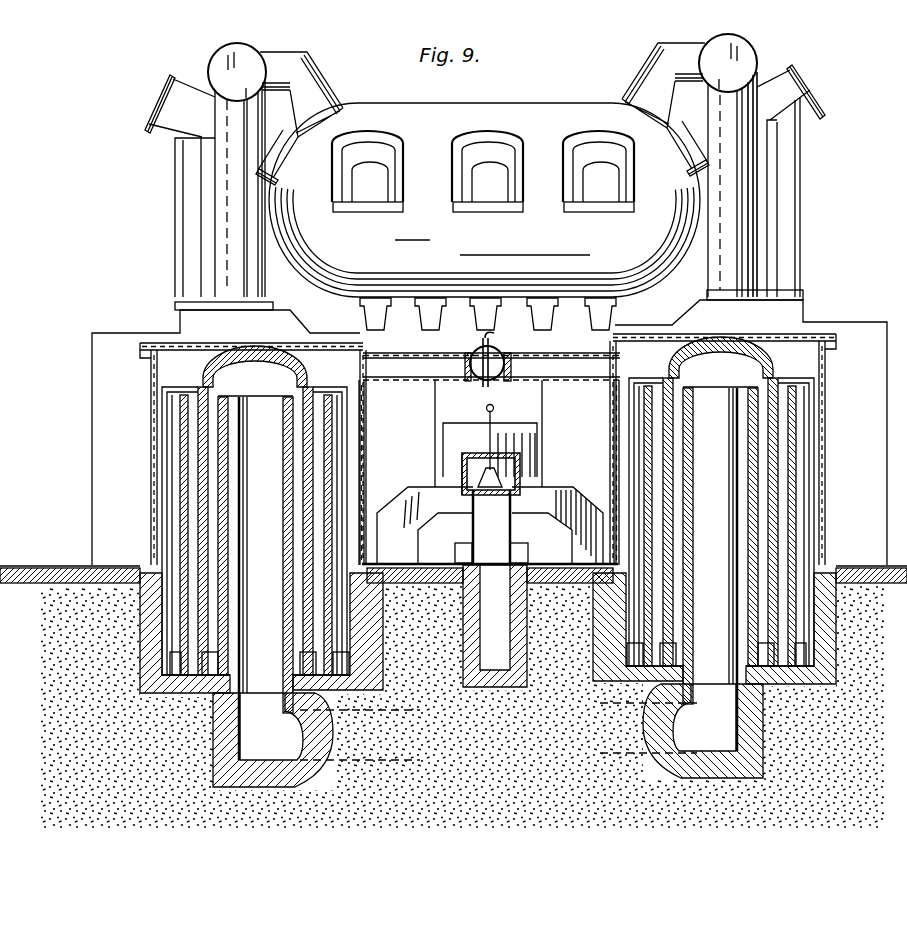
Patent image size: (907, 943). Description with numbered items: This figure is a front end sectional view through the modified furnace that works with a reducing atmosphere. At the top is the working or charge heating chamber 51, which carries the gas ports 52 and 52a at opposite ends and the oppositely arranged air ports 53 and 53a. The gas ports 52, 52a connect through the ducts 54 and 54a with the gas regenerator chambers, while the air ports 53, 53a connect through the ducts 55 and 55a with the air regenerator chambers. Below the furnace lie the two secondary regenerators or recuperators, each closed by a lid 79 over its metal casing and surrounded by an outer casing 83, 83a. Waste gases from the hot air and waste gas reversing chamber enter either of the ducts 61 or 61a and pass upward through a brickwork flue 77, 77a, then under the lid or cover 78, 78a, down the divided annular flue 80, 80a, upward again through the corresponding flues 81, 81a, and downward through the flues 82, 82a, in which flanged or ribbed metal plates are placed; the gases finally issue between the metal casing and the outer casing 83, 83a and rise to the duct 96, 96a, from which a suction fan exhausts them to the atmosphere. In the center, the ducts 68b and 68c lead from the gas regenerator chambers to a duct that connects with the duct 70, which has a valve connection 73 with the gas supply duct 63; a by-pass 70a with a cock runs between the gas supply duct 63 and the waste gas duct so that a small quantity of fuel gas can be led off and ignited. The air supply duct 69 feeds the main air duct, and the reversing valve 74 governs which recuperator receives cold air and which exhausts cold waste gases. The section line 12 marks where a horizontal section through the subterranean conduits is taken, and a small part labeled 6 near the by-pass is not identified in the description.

The section line 12— 12 is at (60, 567).
The working or charge heating chamber 51 is at (528, 117).
The gas port 52 is at (272, 133).
The gas port 52a is at (703, 128).
The air port 53 is at (278, 60).
The air port 53a is at (686, 52).
The duct 54 is at (183, 240).
The duct 54a is at (790, 168).
The duct 55 is at (258, 268).
The duct 55a is at (733, 283).
The duct 61 is at (440, 823).
The duct 61a is at (527, 823).
The gas supply duct 63 is at (476, 553).
The pipe 6 is at (491, 527).
The duct 68b is at (445, 538).
The duct 68c is at (542, 538).
The air supply duct 69 is at (528, 437).
The duct 70 is at (522, 477).
The by-pass 70a is at (491, 527).
The valve connection 73 is at (482, 482).
The reversing valve 74 is at (498, 385).
The brickwork flue 77 is at (290, 603).
The brickwork flue 77a is at (762, 596).
The lid or cover 78 is at (255, 510).
The lid or cover 78a is at (720, 501).
The lid 79 is at (489, 432).
The divided annular flue 80 is at (218, 522).
The divided annular flue 80a is at (683, 502).
The flue 81 is at (197, 640).
The flue 81a is at (665, 628).
The flue 82 is at (180, 430).
The flue 82a is at (800, 432).
The outer casing 83 is at (366, 430).
The outer casing 83a is at (827, 405).
The duct 96 is at (386, 382).
The duct 96a is at (576, 357).